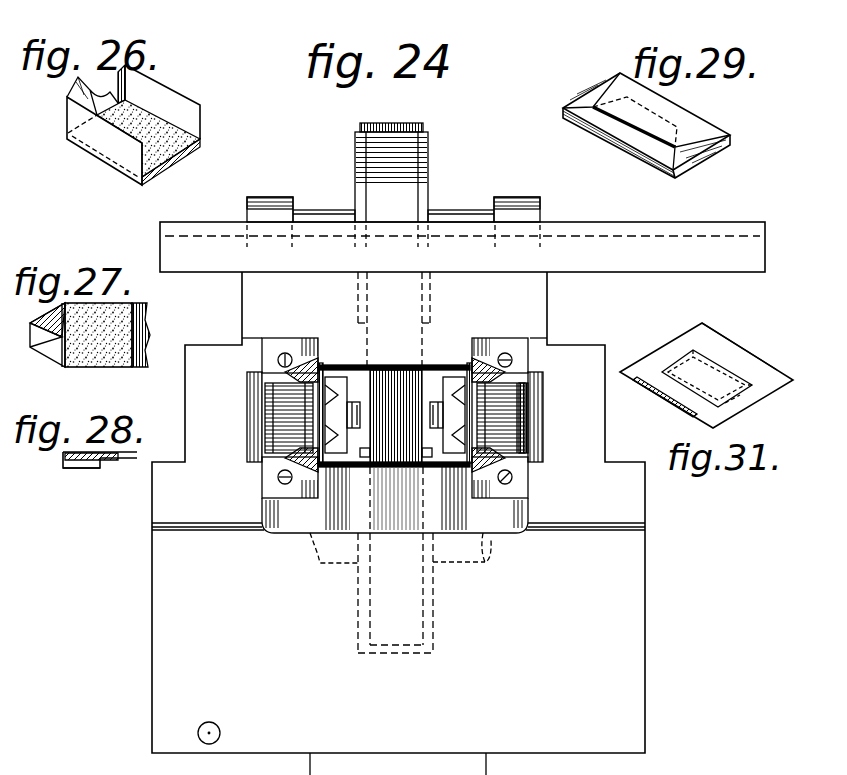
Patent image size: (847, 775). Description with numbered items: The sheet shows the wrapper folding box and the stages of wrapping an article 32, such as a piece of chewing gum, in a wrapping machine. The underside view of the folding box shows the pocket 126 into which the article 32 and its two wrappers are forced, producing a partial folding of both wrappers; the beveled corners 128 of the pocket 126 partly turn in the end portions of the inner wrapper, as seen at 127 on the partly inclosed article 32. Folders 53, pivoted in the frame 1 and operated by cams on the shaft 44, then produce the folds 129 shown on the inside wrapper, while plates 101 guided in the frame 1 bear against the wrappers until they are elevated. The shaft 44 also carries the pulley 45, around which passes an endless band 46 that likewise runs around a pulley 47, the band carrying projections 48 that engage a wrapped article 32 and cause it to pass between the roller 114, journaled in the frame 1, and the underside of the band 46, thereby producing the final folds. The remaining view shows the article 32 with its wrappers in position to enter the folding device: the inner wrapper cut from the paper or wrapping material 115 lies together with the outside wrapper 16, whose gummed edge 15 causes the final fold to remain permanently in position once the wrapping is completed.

In FIG. 24, the frame 1 is at (409, 523).
In FIG. 31, the edge of outside wrapper 15 is at (667, 404).
In FIG. 31, the outside wrapper 16 is at (737, 355).
In FIG. 26, the article 32 is at (160, 163).
In FIG. 27, the article 32 is at (130, 324).
In FIG. 28, the article 32 is at (108, 470).
In FIG. 31, the article 32 is at (735, 398).
In FIG. 24, the shaft 44 is at (472, 553).
In FIG. 24, the pulley 45 is at (427, 627).
In FIG. 24, the endless band 46 is at (405, 465).
In FIG. 24, the pulley 47 is at (423, 183).
In FIG. 24, the projection 48 is at (410, 123).
In FIG. 24, the folder 53 is at (282, 415).
In FIG. 24, the plate 101 is at (345, 380).
In FIG. 24, the roller 114 is at (385, 465).
In FIG. 31, the wrapping material 115 is at (712, 410).
In FIG. 24, the pocket 126 is at (428, 400).
In FIG. 26, the turned-in end portion 127 is at (67, 97).
In FIG. 27, the turned-in end portion 127 is at (44, 349).
In FIG. 24, the beveled corner 128 is at (294, 340).
In FIG. 28, the fold 129 is at (93, 470).
In FIG. 29, the fold 129 is at (605, 95).